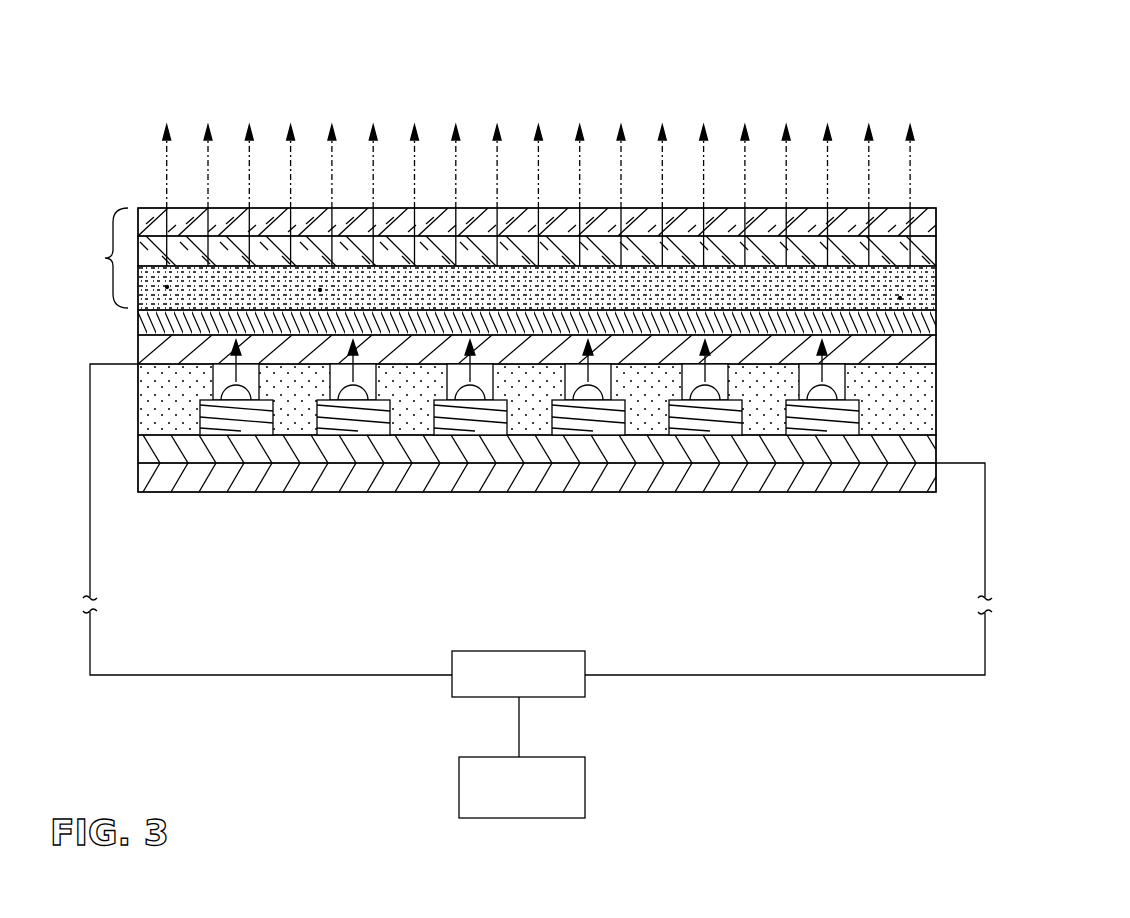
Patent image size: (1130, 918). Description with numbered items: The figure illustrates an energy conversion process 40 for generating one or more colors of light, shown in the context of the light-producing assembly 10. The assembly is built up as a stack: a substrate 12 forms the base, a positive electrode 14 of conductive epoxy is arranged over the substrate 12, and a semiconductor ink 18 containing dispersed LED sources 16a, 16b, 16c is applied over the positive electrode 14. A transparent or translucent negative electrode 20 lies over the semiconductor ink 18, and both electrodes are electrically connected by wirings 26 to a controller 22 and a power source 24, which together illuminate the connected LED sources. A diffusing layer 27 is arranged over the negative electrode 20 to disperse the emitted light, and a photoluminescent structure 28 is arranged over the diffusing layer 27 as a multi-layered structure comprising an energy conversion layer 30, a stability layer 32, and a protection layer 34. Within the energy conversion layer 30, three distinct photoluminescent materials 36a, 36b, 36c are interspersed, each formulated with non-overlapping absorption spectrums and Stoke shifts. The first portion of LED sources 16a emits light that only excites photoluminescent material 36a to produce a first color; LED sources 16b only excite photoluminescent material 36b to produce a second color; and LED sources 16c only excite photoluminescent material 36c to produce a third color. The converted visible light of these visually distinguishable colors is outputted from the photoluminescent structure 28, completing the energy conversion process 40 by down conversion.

The light-producing assembly 10 is at (946, 133).
The substrate 12 is at (937, 492).
The positive electrode 14 is at (137, 450).
The LED sources 16a is at (238, 420).
The LED sources 16b is at (354, 418).
The LED sources 16c is at (476, 418).
The semiconductor ink 18 is at (920, 412).
The negative electrode 20 is at (936, 353).
The controller 22 is at (577, 697).
The power source 24 is at (532, 818).
The wirings 26 is at (90, 525).
The diffusing layer 27 is at (917, 325).
The photoluminescent structure 28 is at (102, 258).
The energy conversion layer 30 is at (936, 283).
The stability layer 32 is at (936, 253).
The protection layer 34 is at (936, 210).
The photoluminescent material 36a is at (167, 287).
The photoluminescent material 36b is at (900, 298).
The photoluminescent material 36c is at (320, 290).
The energy conversion process 40 is at (933, 60).